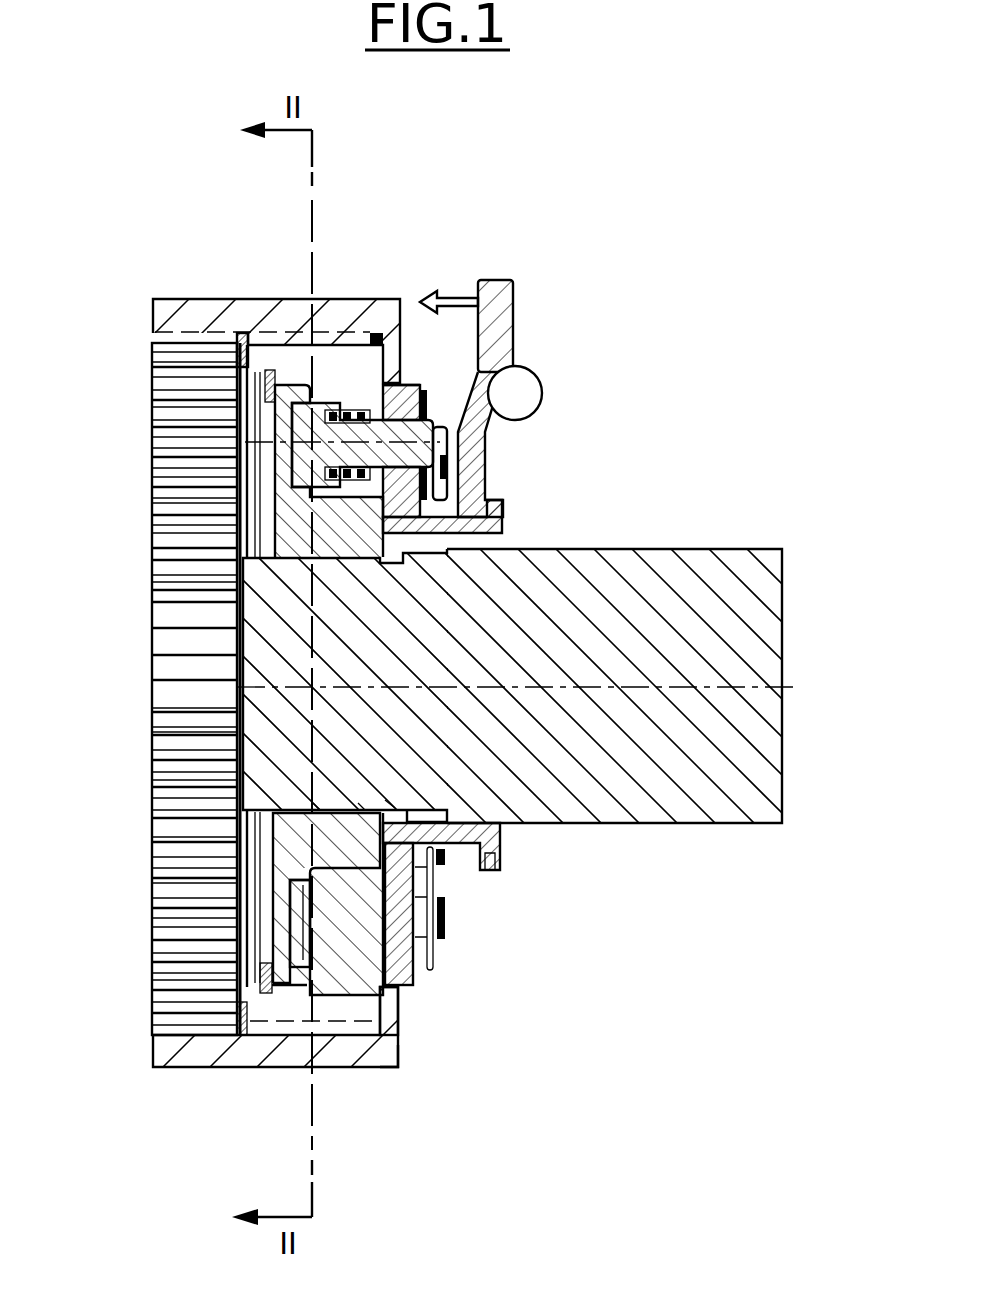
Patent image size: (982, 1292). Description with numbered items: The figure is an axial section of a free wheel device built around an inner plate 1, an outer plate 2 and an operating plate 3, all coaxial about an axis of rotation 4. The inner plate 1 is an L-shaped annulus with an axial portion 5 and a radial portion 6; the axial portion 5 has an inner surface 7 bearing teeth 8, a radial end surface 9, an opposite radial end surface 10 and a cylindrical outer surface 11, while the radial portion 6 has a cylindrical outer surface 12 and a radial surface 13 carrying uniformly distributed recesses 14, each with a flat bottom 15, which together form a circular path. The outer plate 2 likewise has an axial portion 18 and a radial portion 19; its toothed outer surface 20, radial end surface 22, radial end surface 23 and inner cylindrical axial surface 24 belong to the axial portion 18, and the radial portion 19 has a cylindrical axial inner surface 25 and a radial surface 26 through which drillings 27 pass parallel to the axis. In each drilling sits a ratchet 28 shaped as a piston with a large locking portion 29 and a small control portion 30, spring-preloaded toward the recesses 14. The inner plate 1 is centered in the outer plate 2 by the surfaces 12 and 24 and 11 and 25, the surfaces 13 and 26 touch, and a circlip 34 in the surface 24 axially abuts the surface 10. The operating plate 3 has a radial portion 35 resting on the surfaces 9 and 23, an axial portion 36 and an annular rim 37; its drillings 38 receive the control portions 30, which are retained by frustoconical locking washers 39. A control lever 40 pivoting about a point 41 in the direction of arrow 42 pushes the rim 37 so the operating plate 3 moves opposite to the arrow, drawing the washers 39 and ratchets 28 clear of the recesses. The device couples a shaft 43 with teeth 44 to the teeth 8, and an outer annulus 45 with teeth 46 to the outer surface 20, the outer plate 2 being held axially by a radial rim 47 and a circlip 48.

The inner plate 1 is at (237, 862).
The outer plate 2 is at (395, 1040).
The operating plate 3 is at (400, 975).
The axis of rotation 4 is at (714, 687).
The axial portion 5 is at (285, 835).
The radial portion 6 is at (247, 958).
The inner surface 7 is at (320, 810).
The teeth 8 is at (365, 810).
The radial end surface 9 is at (395, 808).
The radial end surface 10 is at (254, 826).
The cylindrical outer surface 11 is at (260, 905).
The cylindrical outer surface 12 is at (298, 1010).
The radial surface 13 is at (332, 995).
The recesses 14 is at (305, 995).
The flat bottom 15 is at (365, 1005).
The axial portion 18 is at (258, 372).
The radial portion 19 is at (438, 372).
The outer surface 20 is at (320, 390).
The radial end surface 22 is at (242, 350).
The radial end surface 23 is at (395, 385).
The inner cylindrical axial surface 24 is at (249, 380).
The cylindrical axial inner surface 25 is at (498, 516).
The radial surface 26 is at (270, 370).
The drillings 27 is at (428, 392).
The ratchets 28 is at (445, 450).
The locking portion 29 is at (318, 403).
The control portion 30 is at (442, 482).
The circlip 34 is at (266, 1000).
The radial portion 35 is at (352, 412).
The axial portion 36 is at (462, 842).
The annular rim 37 is at (490, 862).
The drillings 38 is at (482, 432).
The frustoconical locking washer 39 is at (428, 410).
The control lever 40 is at (492, 300).
The point 41 is at (518, 394).
The arrow 42 is at (456, 300).
The shaft 43 is at (618, 600).
The teeth 44 is at (380, 558).
The outer annulus 45 is at (170, 318).
The teeth 46 is at (373, 335).
The radial rim 47 is at (400, 1052).
The circlip 48 is at (240, 1040).